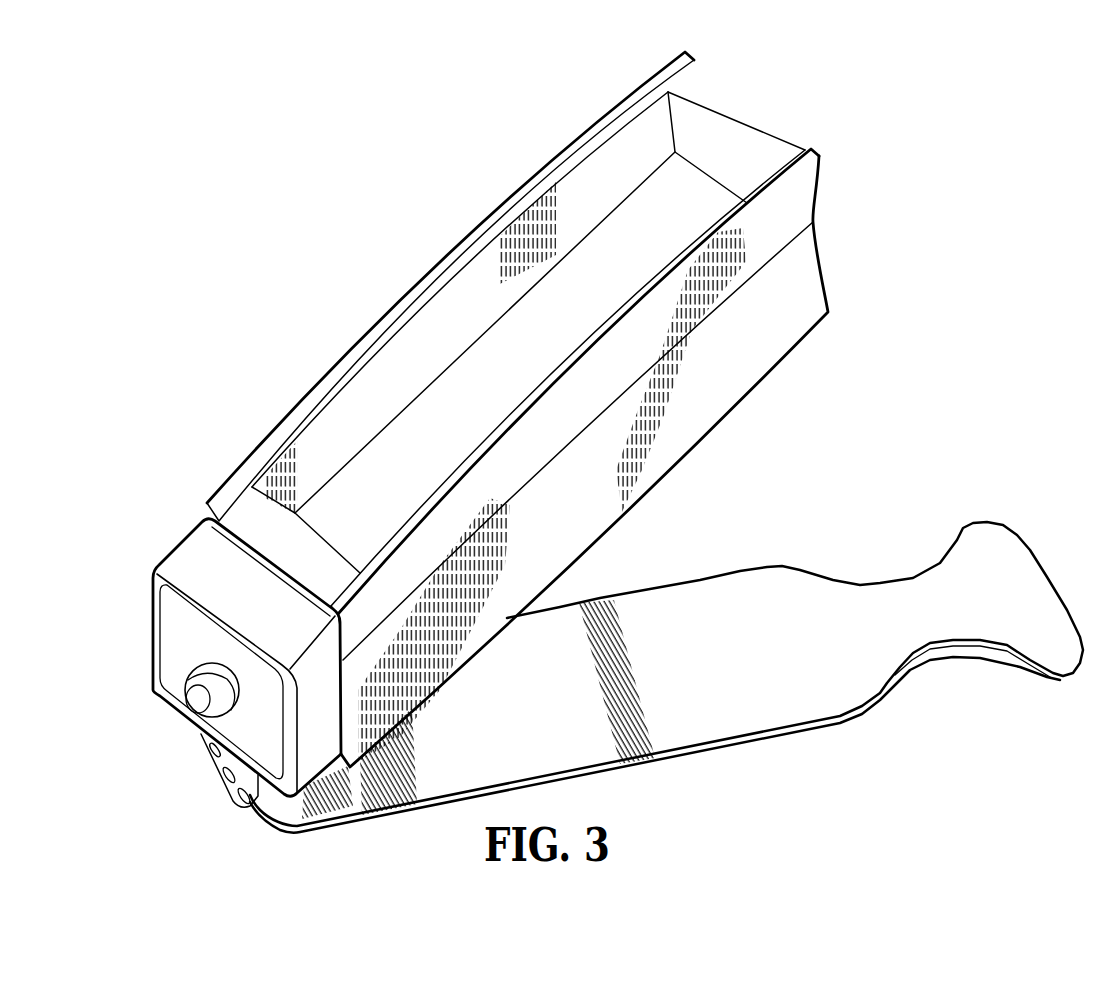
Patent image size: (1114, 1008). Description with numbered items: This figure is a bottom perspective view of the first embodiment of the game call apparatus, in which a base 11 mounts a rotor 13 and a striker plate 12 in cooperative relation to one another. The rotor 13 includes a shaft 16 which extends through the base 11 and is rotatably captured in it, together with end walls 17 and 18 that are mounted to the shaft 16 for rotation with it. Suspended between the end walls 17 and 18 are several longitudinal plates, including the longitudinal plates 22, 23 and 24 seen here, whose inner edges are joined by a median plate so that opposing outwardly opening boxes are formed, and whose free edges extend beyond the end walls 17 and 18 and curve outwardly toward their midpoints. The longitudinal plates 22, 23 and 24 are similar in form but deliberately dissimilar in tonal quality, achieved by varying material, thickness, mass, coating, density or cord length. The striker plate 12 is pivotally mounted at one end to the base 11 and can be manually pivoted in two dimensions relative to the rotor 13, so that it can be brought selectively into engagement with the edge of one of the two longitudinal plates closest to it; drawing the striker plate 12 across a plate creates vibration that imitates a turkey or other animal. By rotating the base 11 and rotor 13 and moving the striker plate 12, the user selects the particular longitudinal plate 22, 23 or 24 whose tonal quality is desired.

The base 11 is at (193, 568).
The striker plate 12 is at (688, 727).
The rotor 13 is at (780, 401).
The shaft 16 is at (198, 703).
The end wall 17 is at (313, 563).
The end wall 18 is at (750, 137).
The longitudinal plate 22 is at (440, 357).
The longitudinal plate 23 is at (600, 510).
The longitudinal plate 24 is at (567, 452).